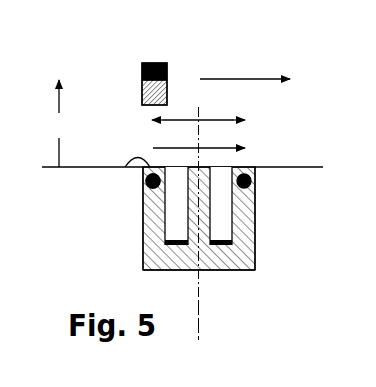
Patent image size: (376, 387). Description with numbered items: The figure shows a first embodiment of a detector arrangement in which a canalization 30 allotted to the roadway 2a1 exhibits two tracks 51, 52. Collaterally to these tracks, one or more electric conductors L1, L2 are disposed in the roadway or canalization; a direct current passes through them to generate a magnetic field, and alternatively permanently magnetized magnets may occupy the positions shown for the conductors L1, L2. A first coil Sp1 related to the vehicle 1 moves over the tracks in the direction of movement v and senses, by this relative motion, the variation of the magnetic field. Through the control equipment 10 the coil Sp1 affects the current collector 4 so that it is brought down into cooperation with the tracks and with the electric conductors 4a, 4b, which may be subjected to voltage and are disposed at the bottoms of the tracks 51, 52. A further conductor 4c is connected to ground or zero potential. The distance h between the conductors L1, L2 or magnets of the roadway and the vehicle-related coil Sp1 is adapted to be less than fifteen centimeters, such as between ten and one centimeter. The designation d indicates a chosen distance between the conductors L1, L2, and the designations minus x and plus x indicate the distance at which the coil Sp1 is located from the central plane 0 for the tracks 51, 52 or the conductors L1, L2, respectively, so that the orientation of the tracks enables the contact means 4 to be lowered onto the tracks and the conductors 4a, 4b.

The vehicle 1 is at (120, 56).
The control equipment 10 is at (189, 60).
The first coil Sp1 is at (127, 84).
The canalization 30 is at (260, 201).
The roadway 2a1 is at (116, 153).
The current collector 4 is at (203, 335).
The electric conductor 4a is at (168, 240).
The electric conductor 4b is at (232, 240).
The conductor 4c is at (142, 168).
The track 51 is at (175, 218).
The track 52 is at (222, 210).
The electric conductor L1 is at (144, 184).
The electric conductor L2 is at (253, 177).
The direction of movement v is at (252, 90).
The distance h is at (58, 123).
The distance d is at (199, 140).
The distance x is at (198, 112).
The central plane 0 is at (200, 330).